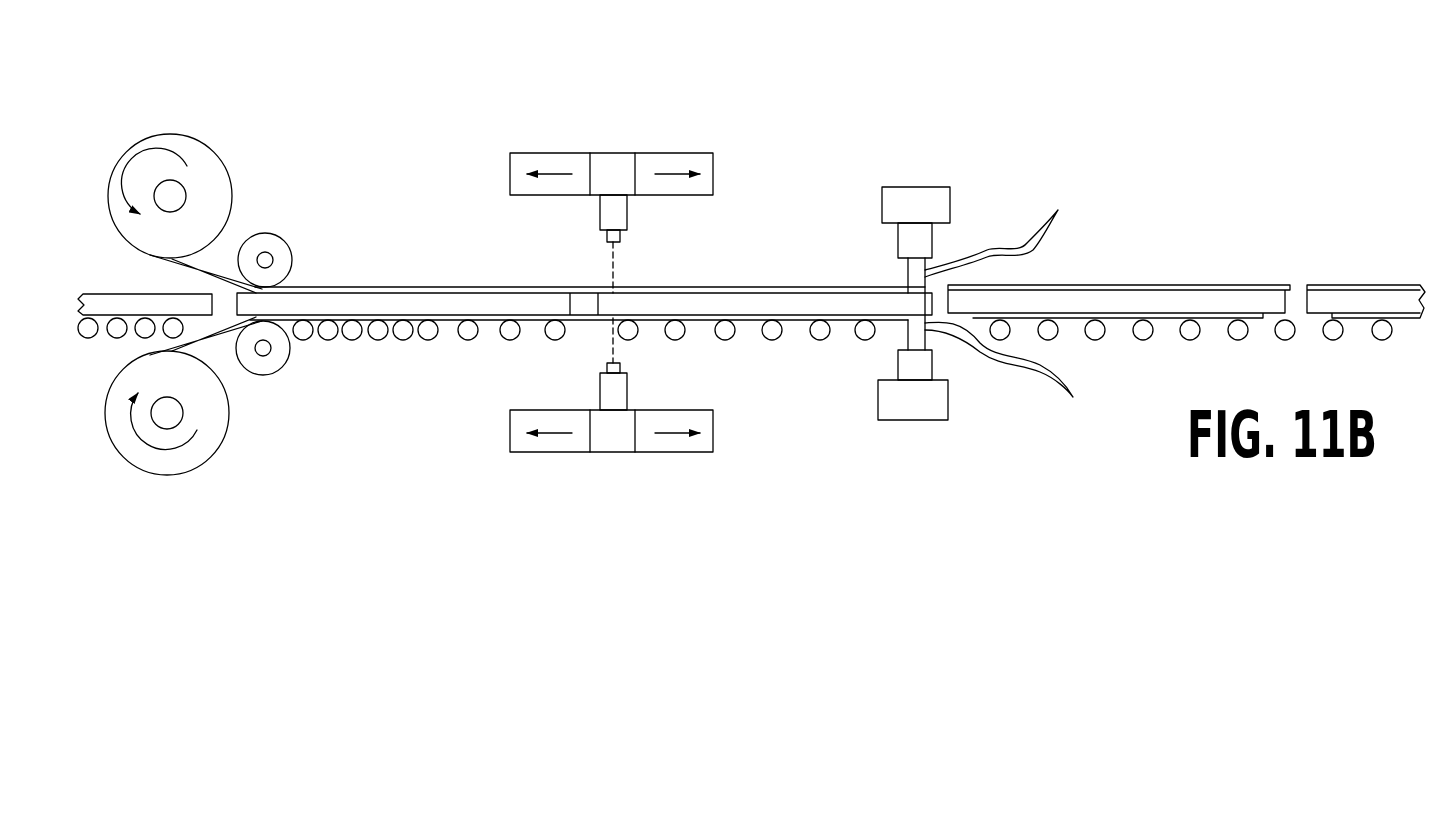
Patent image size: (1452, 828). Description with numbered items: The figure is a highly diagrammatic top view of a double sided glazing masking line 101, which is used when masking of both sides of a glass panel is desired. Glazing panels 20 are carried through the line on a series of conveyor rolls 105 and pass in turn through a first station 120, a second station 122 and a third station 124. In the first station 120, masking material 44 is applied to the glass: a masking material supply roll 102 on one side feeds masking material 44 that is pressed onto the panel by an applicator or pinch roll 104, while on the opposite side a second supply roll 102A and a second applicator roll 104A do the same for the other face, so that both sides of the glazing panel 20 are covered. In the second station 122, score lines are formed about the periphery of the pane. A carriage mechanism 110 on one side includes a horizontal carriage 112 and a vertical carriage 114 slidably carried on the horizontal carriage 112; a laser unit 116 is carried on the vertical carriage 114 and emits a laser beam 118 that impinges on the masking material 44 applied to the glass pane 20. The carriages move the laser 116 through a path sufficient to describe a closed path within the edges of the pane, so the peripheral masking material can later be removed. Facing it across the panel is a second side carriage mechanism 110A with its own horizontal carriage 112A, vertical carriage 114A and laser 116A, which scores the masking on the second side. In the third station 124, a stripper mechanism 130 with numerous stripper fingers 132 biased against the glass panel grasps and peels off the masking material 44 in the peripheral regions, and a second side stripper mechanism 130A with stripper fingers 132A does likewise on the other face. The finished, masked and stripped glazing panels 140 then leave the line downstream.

The glazing panel 20 is at (135, 293).
The masking material 44 is at (203, 263).
The double sided glazing masking line 101 is at (631, 73).
The masking material supply roll 102 is at (210, 412).
The second supply roll 102A is at (232, 186).
The applicator roll 104 is at (273, 360).
The second applicator roll 104A is at (292, 259).
The conveyor rolls 105 is at (400, 341).
The carriage mechanism 110 is at (682, 453).
The second side carriage mechanism 110A is at (700, 153).
The horizontal carriage 112 is at (535, 453).
The horizontal carriage 112A is at (510, 158).
The vertical carriage 114 is at (600, 378).
The vertical carriage 114A is at (627, 210).
The laser unit 116 is at (621, 370).
The laser 116A is at (621, 237).
The laser beam 118 is at (611, 263).
The first station 120 is at (246, 137).
The second station 122 is at (625, 137).
The third station 124 is at (938, 133).
The stripper mechanism 130 is at (917, 425).
The second side stripper mechanism 130A is at (938, 165).
The stripper fingers 132 is at (937, 401).
The stripper fingers 132A is at (945, 198).
The finished glazing panels 140 is at (1299, 248).